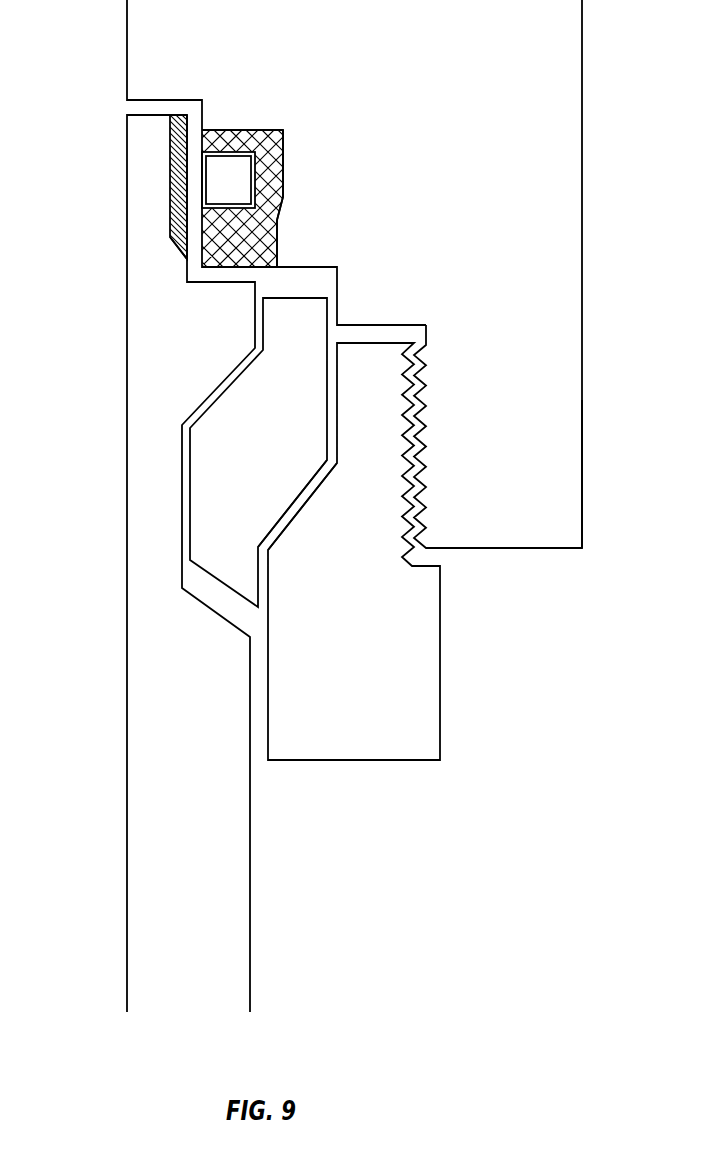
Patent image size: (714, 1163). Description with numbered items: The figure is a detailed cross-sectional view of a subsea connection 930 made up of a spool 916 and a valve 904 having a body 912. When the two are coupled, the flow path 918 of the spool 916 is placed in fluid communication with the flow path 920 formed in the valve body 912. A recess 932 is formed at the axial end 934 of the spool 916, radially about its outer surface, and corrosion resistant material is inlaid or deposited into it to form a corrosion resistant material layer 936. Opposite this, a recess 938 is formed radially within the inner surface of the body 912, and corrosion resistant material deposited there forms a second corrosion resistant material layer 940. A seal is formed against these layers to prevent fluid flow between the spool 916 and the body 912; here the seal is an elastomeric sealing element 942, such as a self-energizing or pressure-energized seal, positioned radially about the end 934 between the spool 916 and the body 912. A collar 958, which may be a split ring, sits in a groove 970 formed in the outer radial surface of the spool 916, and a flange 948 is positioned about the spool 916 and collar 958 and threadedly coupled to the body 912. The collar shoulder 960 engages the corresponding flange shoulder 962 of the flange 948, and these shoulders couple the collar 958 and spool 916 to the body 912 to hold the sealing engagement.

The valve 904 is at (582, 507).
The valve body 912 is at (452, 174).
The spool 916 is at (218, 812).
The flow path of the spool 918 is at (127, 778).
The flow path of the valve body 920 is at (127, 84).
The subsea connection 930 is at (491, 751).
The recess 932 is at (170, 230).
The end of the spool 934 is at (158, 149).
The corrosion resistant material layer 936 is at (180, 187).
The recess 938 is at (269, 129).
The corrosion resistant material layer 940 is at (276, 176).
The sealing element 942 is at (235, 177).
The flange 948 is at (372, 647).
The collar 958 is at (278, 465).
The collar shoulder 960 is at (274, 528).
The flange shoulder 962 is at (294, 518).
The groove 970 is at (181, 548).